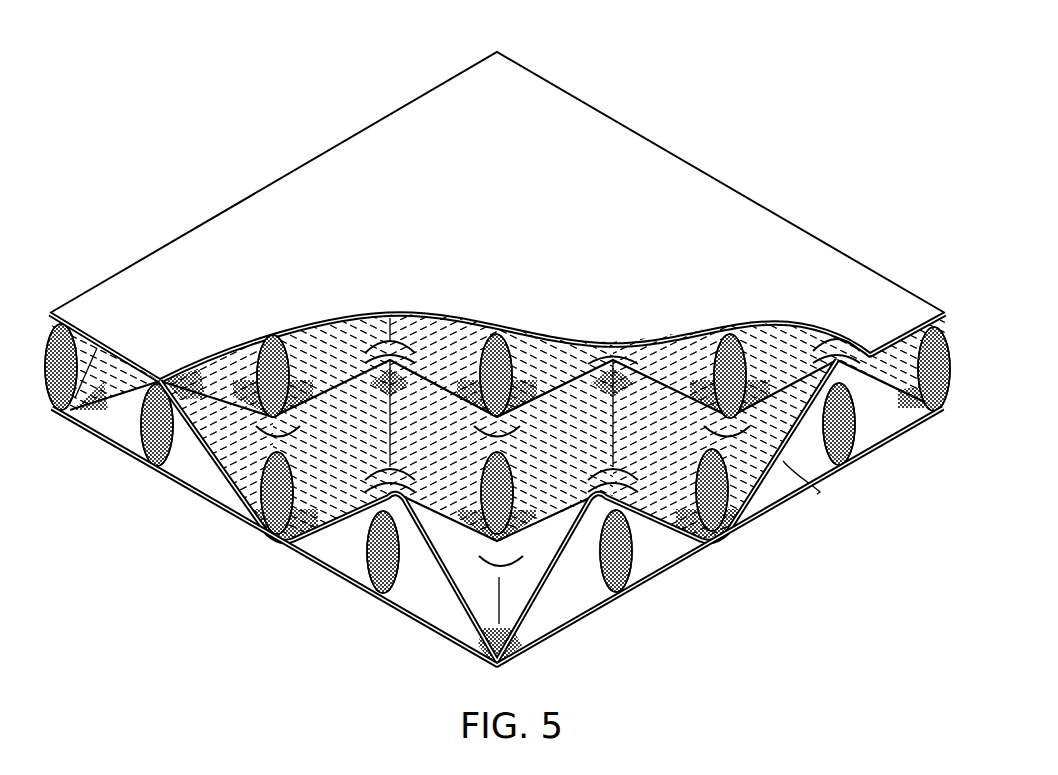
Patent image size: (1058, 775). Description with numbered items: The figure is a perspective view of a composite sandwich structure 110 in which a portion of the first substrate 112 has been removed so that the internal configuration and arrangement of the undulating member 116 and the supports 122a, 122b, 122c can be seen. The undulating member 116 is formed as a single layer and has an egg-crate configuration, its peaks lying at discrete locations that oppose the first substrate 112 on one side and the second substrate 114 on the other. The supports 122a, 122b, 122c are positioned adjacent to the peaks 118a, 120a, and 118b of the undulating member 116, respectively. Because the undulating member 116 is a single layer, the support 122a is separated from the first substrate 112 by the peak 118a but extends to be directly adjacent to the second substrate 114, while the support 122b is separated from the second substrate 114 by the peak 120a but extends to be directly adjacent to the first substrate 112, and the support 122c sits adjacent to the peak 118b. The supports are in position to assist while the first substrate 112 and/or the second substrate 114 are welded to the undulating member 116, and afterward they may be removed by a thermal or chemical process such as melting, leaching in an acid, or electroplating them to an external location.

The composite sandwich structure 110 is at (502, 353).
The first substrate 112 is at (672, 168).
The second substrate 114 is at (193, 493).
The undulating member 116 is at (497, 432).
The peak 118a is at (193, 381).
The peak 118b is at (392, 512).
The peak 120a is at (283, 522).
The support 122a is at (150, 432).
The support 122b is at (282, 538).
The support 122c is at (383, 588).